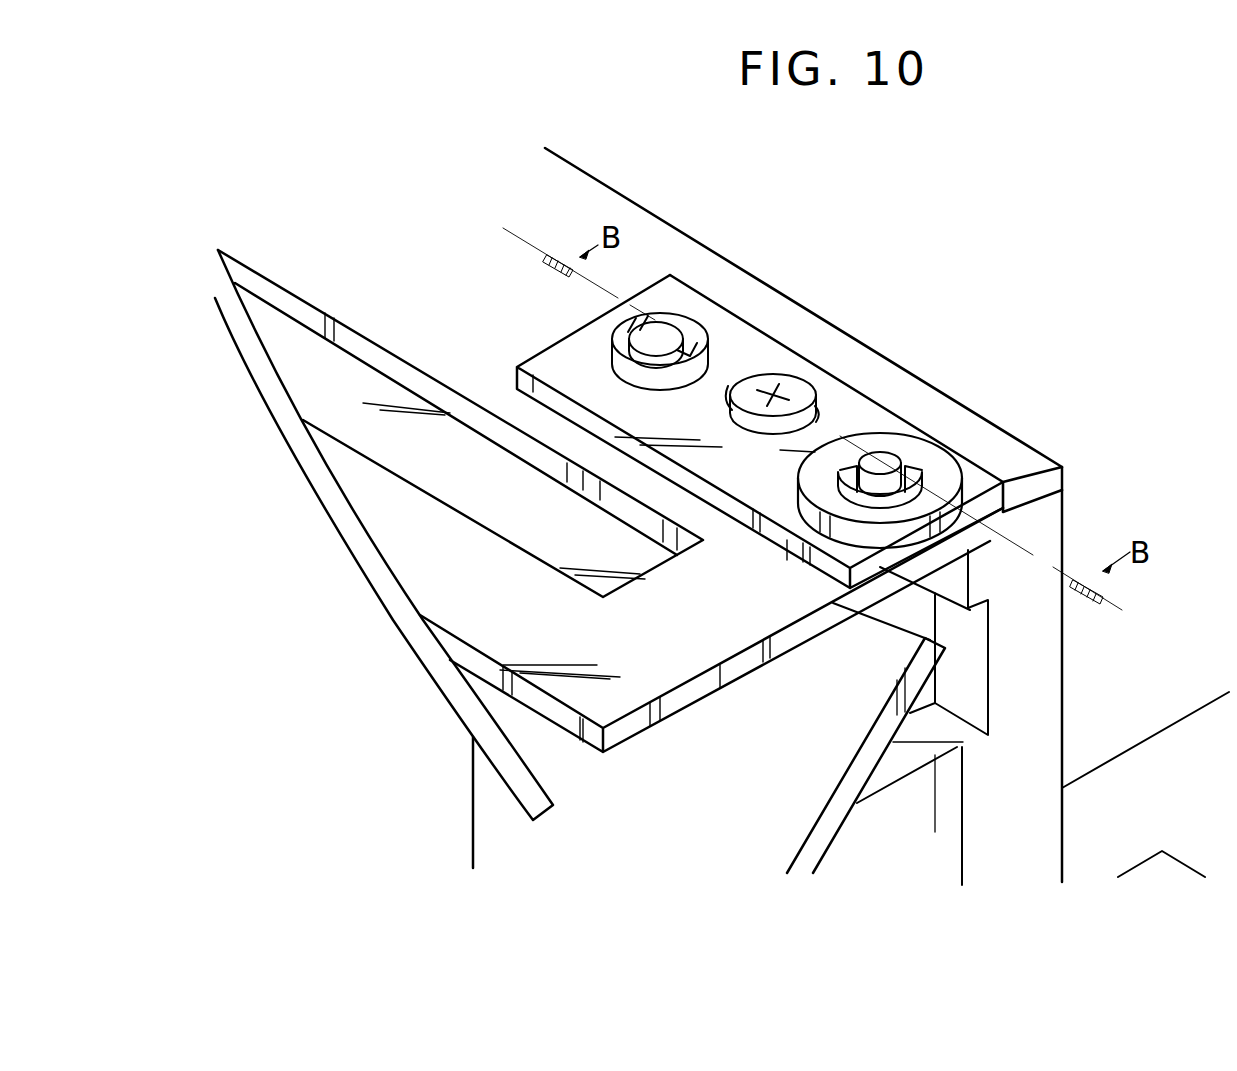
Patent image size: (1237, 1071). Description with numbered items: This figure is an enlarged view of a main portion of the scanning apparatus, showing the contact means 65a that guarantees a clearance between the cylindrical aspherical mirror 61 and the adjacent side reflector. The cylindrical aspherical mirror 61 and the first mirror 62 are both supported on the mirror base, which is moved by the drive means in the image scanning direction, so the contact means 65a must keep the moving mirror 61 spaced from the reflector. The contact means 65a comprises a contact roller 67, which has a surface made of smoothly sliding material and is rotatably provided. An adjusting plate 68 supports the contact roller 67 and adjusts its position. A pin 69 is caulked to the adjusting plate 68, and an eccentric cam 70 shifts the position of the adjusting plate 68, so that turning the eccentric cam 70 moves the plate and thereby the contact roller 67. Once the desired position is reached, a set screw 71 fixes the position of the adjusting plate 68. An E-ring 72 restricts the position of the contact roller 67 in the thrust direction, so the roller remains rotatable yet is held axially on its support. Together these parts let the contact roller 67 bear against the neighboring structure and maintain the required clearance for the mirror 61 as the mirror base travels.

The cylindrical aspherical mirror 61 is at (438, 676).
The first mirror 62 is at (837, 753).
The contact means 65a is at (858, 392).
The contact roller 67 is at (1020, 465).
The adjusting plate 68 is at (897, 425).
The pin 69 is at (905, 462).
The eccentric cam 70 is at (698, 327).
The set screw 71 is at (788, 385).
The E-ring 72 is at (922, 476).